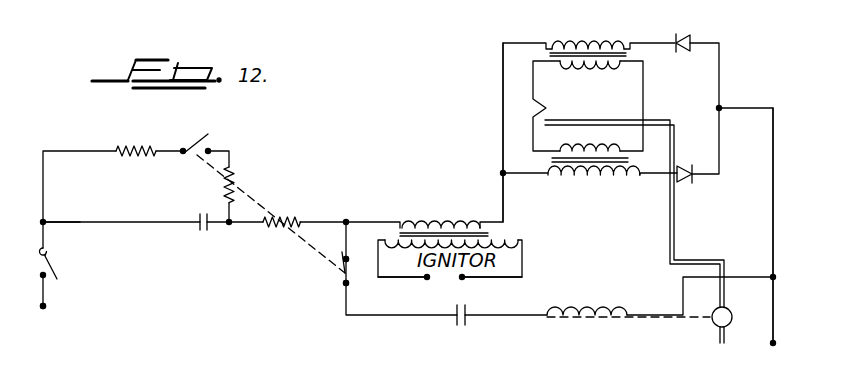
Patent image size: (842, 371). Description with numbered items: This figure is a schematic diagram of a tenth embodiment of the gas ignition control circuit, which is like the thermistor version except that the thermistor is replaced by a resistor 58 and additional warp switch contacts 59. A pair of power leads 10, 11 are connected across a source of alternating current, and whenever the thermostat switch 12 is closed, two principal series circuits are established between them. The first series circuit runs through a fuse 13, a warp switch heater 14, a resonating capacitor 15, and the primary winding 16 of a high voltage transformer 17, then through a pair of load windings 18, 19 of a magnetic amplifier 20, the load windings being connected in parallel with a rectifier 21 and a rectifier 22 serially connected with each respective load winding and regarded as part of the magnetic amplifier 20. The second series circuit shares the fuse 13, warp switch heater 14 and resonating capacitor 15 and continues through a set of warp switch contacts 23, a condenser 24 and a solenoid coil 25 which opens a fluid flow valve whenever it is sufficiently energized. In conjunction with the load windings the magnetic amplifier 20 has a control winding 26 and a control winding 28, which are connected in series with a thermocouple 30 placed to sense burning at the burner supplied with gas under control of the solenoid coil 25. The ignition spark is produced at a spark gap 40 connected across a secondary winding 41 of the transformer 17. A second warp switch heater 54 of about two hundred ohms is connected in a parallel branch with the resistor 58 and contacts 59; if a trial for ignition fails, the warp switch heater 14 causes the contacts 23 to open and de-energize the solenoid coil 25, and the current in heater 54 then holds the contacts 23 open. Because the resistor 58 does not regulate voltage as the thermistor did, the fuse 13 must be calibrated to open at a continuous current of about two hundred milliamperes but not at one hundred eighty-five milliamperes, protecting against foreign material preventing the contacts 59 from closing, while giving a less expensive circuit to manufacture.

The power lead 10 is at (44, 306).
The power lead 11 is at (773, 240).
The thermostat switch 12 is at (55, 268).
The fuse 13 is at (57, 222).
The warp switch heater 14 is at (300, 222).
The resonating capacitor 15 is at (201, 231).
The primary winding 16 is at (446, 222).
The high voltage transformer 17 is at (492, 236).
The load winding 18 is at (600, 40).
The load winding 19 is at (592, 178).
The magnetic amplifier 20 is at (501, 113).
The rectifier 21 is at (690, 35).
The rectifier 22 is at (690, 178).
The warp switch contacts 23 is at (346, 283).
The condenser 24 is at (457, 318).
The solenoid coil 25 is at (628, 312).
The control winding 26 is at (588, 76).
The control winding 28 is at (594, 152).
The thermocouple 30 is at (560, 110).
The spark gap 40 is at (440, 282).
The secondary winding 41 is at (522, 246).
The warp switch heater 54 is at (232, 168).
The resistor 58 is at (116, 148).
The warp switch contacts 59 is at (199, 143).